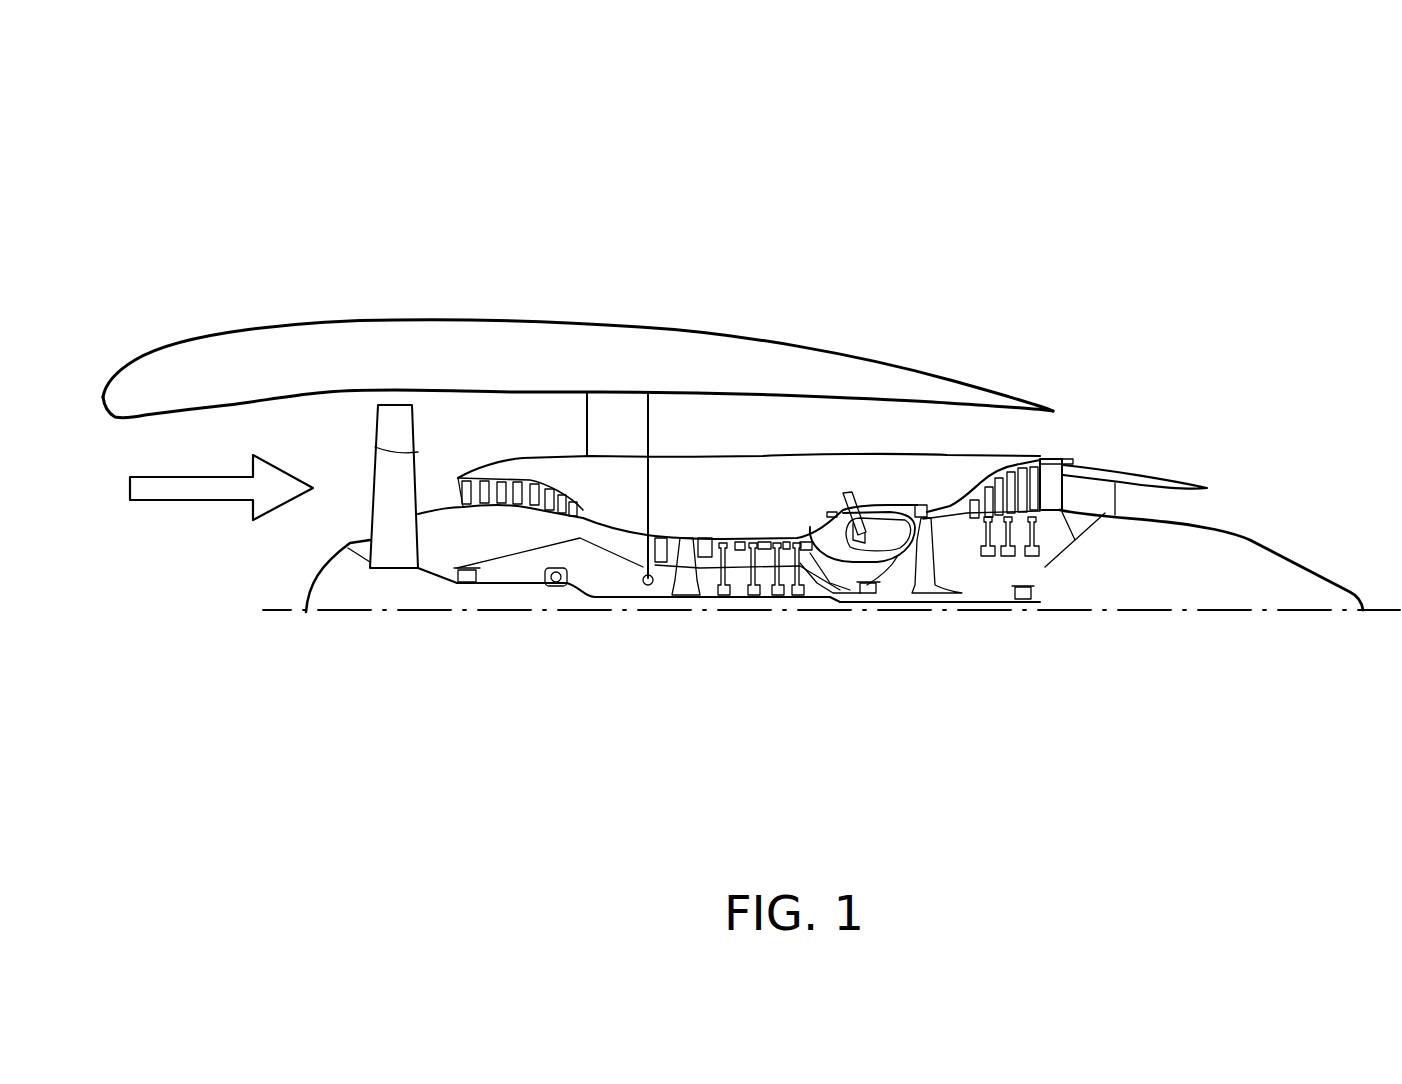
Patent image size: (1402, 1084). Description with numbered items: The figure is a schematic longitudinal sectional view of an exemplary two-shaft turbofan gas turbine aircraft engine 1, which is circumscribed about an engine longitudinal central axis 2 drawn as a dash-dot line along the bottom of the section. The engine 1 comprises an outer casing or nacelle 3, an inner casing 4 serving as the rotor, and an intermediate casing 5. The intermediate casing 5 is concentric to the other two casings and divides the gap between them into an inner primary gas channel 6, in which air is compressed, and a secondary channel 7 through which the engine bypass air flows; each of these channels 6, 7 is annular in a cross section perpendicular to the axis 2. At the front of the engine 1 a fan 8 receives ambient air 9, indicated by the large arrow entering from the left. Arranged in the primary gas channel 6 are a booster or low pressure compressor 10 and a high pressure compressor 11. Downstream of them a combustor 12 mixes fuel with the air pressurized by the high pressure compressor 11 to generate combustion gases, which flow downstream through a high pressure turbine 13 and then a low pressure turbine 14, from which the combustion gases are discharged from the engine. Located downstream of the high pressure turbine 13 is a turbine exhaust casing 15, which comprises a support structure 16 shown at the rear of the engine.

The turbofan gas turbine aircraft engine 1 is at (1203, 193).
The engine longitudinal central axis 2 is at (1230, 612).
The outer casing or nacelle 3 is at (225, 374).
The inner casing 4 is at (593, 577).
The intermediate casing 5 is at (770, 487).
The inner primary gas channel 6 is at (433, 472).
The secondary channel 7 is at (513, 415).
The fan 8 is at (391, 415).
The ambient air 9 is at (170, 490).
The booster or low pressure compressor 10 is at (468, 535).
The high pressure compressor 11 is at (764, 640).
The combustor 12 is at (893, 537).
The high pressure turbine 13 is at (954, 645).
The low pressure turbine 14 is at (1046, 577).
The turbine exhaust casing 15 is at (1133, 465).
The support structure 16 is at (1098, 489).